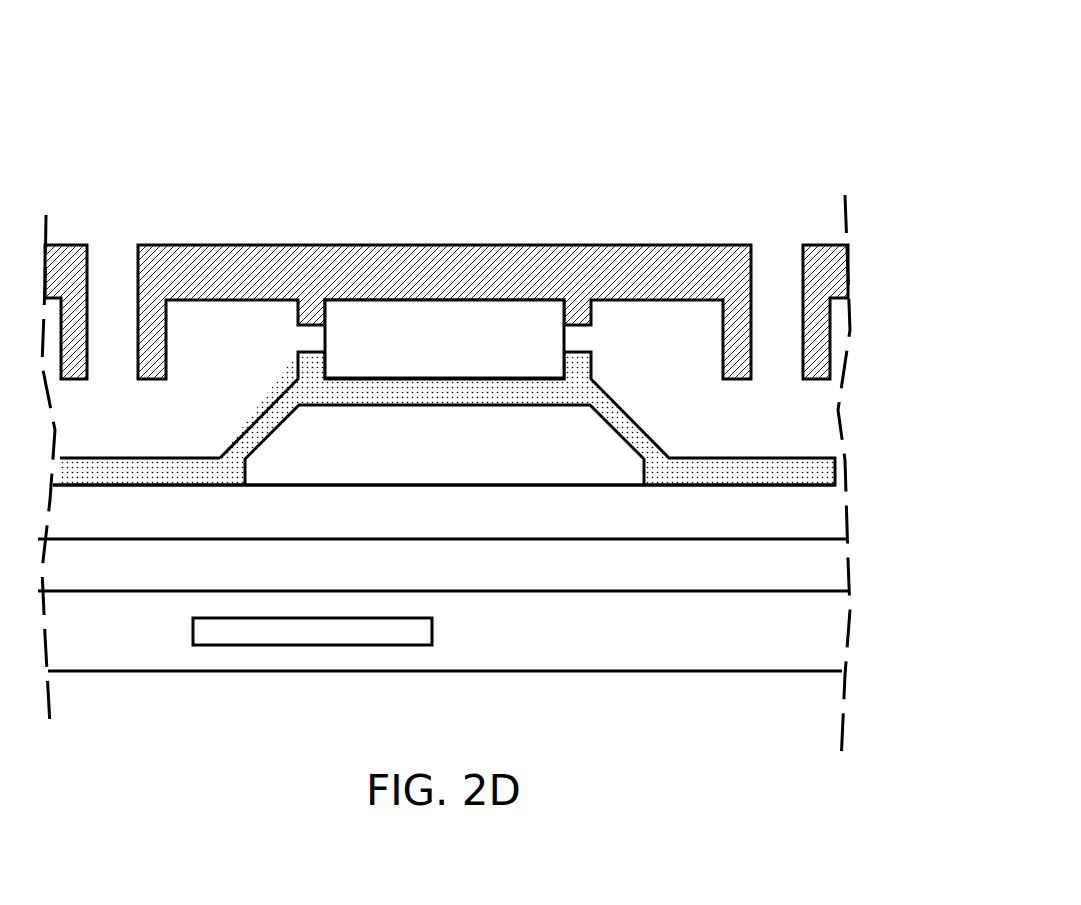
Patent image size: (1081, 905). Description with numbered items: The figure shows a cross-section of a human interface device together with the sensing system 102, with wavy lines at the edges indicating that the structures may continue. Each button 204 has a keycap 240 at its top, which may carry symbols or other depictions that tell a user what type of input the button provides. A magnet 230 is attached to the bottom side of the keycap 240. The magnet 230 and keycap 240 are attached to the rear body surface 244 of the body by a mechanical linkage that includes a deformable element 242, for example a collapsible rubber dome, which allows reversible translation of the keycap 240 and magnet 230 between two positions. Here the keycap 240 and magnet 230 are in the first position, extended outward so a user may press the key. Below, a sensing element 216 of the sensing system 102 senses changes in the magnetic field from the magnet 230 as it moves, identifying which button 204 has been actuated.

The button 204 is at (817, 212).
The keycap 240 is at (626, 245).
The magnet 230 is at (458, 327).
The deformable element 242 is at (805, 476).
The rear body surface 244 is at (817, 512).
The sensing element 216 is at (262, 632).
The sensing system 102 is at (444, 697).